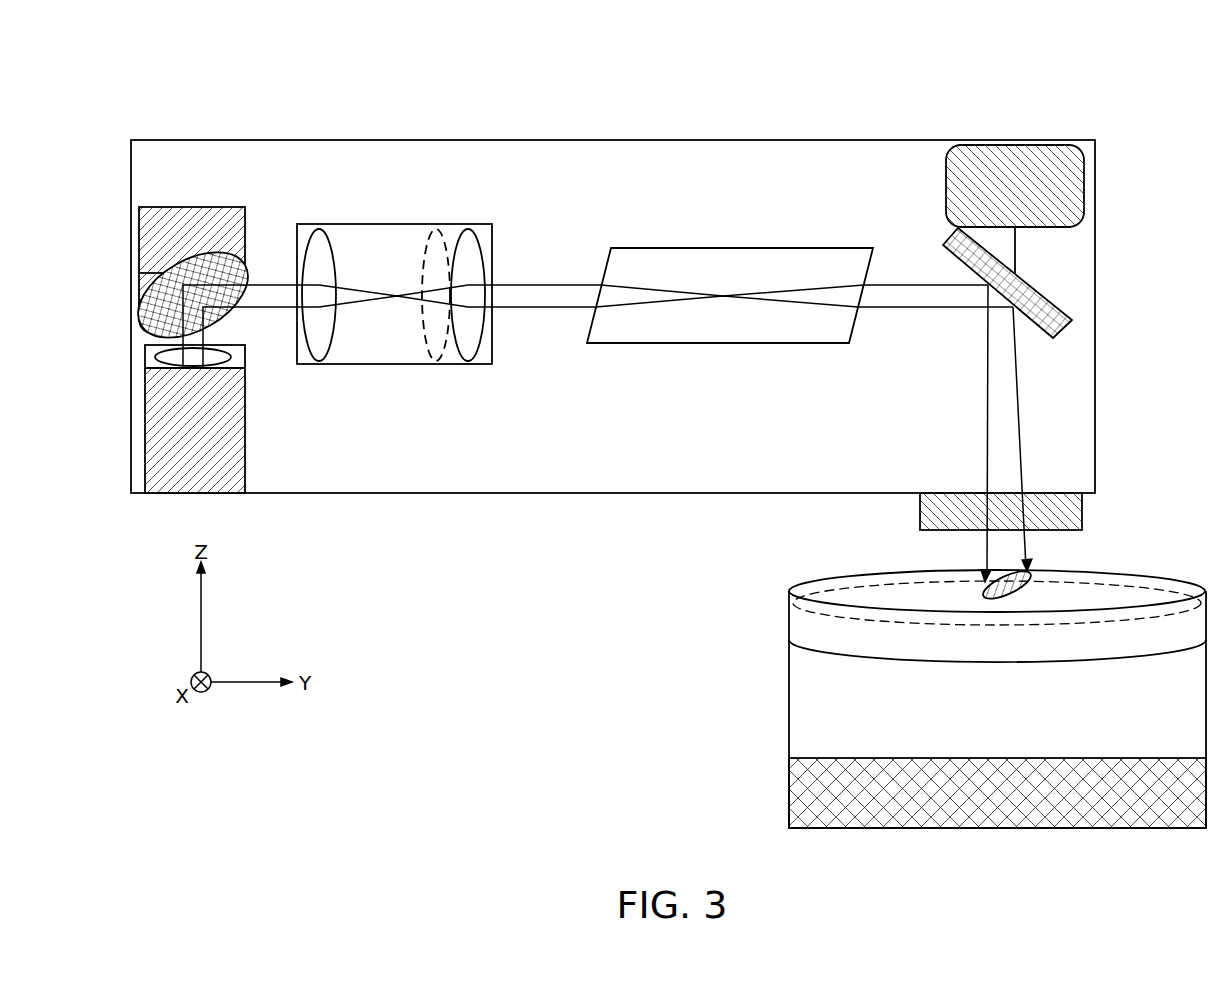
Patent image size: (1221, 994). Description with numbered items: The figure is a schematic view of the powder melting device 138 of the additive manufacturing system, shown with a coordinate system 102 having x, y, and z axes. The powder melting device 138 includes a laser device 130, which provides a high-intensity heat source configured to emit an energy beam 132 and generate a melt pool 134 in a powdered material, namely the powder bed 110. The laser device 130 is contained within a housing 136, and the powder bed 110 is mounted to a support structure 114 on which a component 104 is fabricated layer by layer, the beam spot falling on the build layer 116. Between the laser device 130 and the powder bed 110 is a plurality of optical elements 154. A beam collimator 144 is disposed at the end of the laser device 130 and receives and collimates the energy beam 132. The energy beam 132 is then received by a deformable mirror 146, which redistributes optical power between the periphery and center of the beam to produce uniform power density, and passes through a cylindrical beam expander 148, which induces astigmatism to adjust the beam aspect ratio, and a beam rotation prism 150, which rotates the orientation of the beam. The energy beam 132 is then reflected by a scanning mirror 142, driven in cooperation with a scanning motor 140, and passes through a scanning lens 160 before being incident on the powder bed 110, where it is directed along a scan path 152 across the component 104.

The coordinate system 102 is at (268, 590).
The component 104 is at (805, 623).
The powder bed 110 is at (805, 692).
The support structure 114 is at (798, 789).
The build layer 116 is at (818, 590).
The laser device 130 is at (233, 440).
The energy beam 132 is at (547, 283).
The melt pool 134 is at (978, 597).
The housing 136 is at (1098, 314).
The powder melting device 138 is at (1084, 70).
The scanning motor 140 is at (1063, 192).
The scanning mirror 142 is at (1045, 293).
The beam collimator 144 is at (240, 358).
The deformable mirror 146 is at (192, 218).
The cylindrical beam expander 148 is at (393, 220).
The beam rotation prism 150 is at (741, 258).
The scan path 152 is at (862, 570).
The optical elements 154 is at (549, 538).
The scanning lens 160 is at (1083, 510).